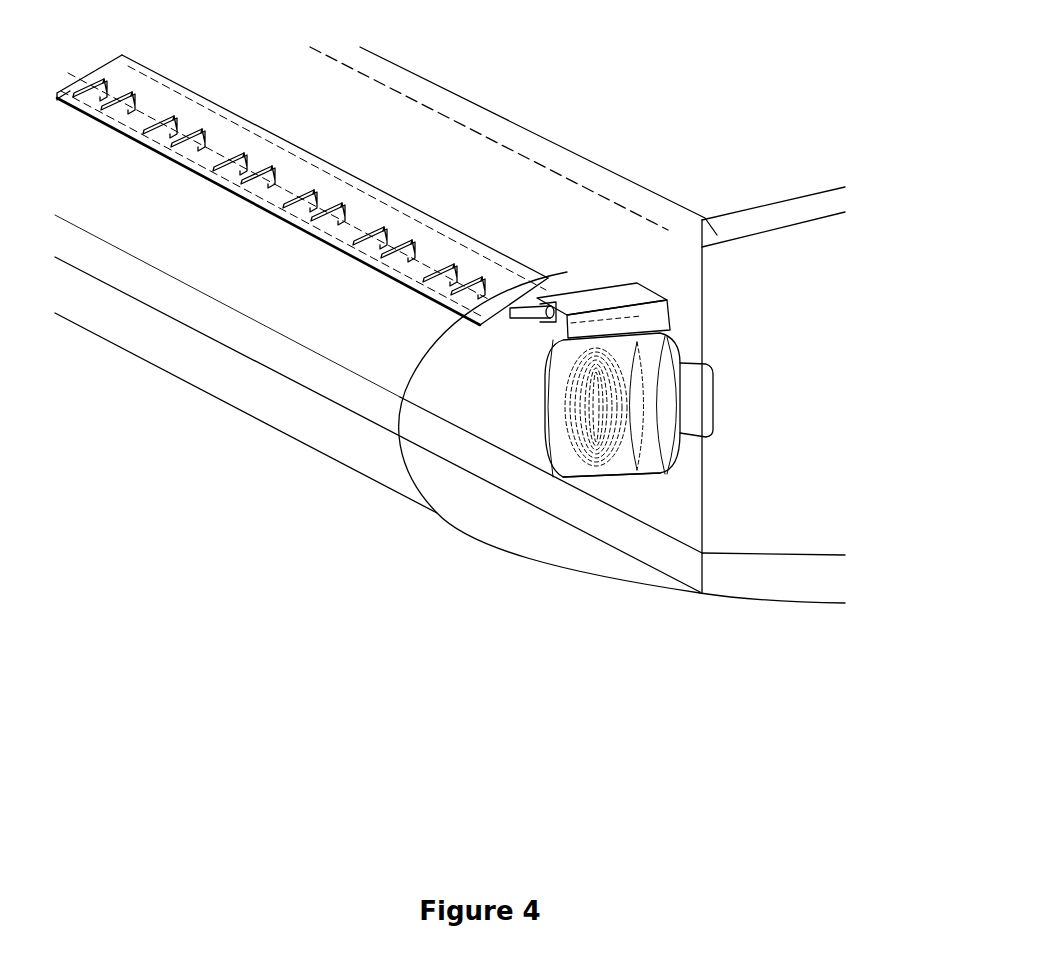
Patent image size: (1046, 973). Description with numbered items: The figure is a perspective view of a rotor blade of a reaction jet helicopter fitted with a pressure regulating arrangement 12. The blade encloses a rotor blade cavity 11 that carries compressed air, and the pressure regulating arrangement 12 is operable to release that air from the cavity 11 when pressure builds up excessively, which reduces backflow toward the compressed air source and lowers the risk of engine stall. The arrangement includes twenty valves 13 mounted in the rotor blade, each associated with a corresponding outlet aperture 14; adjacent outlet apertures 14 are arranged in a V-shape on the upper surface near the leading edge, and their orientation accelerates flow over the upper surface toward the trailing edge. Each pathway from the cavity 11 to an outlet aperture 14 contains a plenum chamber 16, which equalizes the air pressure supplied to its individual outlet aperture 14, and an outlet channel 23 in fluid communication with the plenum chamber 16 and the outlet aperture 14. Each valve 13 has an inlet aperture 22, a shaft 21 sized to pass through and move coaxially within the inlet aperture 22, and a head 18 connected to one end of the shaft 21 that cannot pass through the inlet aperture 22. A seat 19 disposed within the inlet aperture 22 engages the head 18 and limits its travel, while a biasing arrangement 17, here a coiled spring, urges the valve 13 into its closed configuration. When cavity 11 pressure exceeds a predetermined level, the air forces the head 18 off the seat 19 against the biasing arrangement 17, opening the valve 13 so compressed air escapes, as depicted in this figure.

The rotor blade cavity 11 is at (760, 330).
The pressure regulating arrangement 12 is at (540, 243).
The valve 13 is at (590, 468).
The outlet aperture 14 is at (260, 160).
The plenum chamber 16 is at (587, 300).
The biasing arrangement 17 is at (578, 383).
The head 18 is at (632, 350).
The seat 19 is at (673, 357).
The shaft 21 is at (663, 440).
The inlet aperture 22 is at (718, 420).
The outlet channel 23 is at (525, 318).